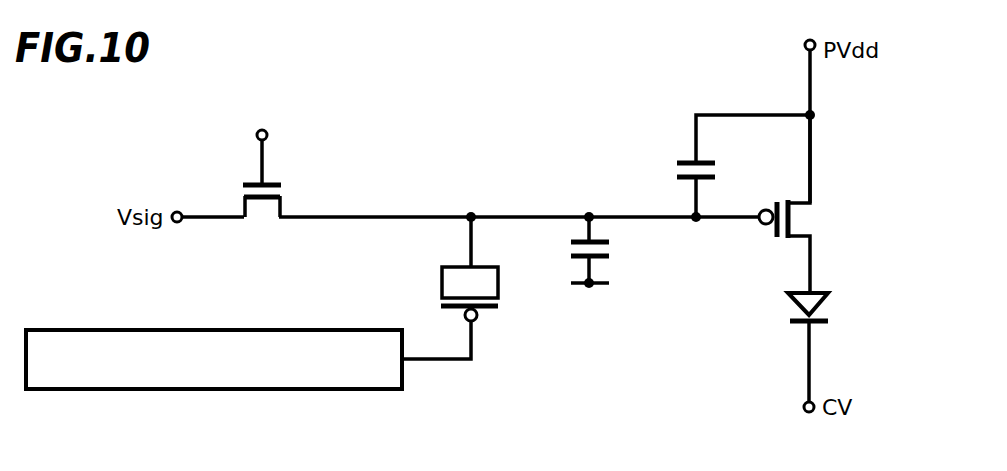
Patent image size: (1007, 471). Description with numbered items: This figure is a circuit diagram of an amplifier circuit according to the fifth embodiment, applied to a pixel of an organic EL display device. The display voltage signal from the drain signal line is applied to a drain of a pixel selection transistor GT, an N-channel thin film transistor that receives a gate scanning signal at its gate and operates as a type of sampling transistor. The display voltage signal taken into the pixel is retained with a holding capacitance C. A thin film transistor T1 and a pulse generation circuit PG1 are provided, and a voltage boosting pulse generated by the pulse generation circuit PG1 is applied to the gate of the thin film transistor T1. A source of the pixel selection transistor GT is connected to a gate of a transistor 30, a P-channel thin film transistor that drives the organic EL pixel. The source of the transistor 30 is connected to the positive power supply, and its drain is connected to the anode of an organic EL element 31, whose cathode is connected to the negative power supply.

The pixel selection transistor GT is at (283, 183).
The thin film transistor T1 is at (503, 310).
The holding capacitance C is at (603, 252).
The transistor 30 is at (822, 222).
The organic EL element 31 is at (838, 306).
The pulse generation circuit PG1 is at (175, 390).